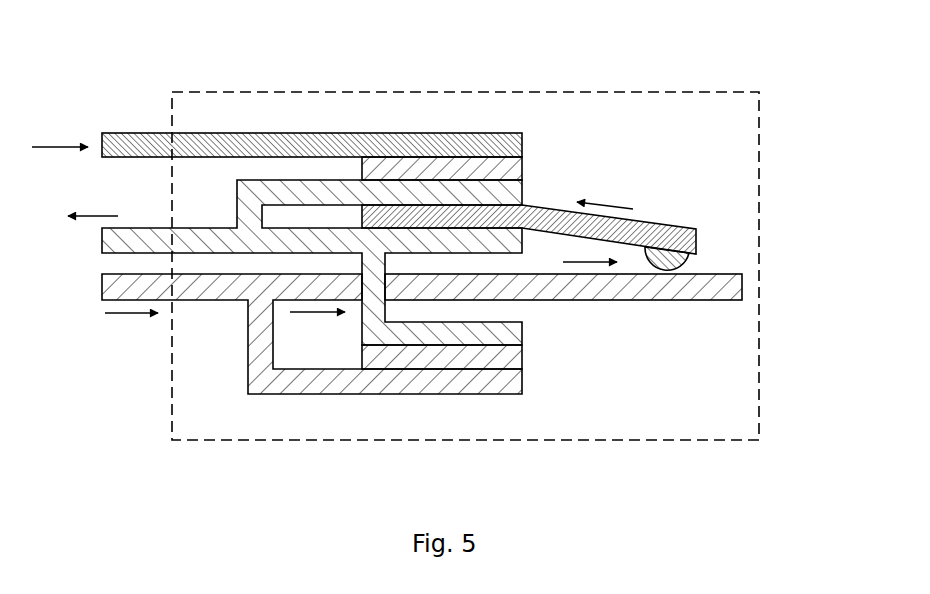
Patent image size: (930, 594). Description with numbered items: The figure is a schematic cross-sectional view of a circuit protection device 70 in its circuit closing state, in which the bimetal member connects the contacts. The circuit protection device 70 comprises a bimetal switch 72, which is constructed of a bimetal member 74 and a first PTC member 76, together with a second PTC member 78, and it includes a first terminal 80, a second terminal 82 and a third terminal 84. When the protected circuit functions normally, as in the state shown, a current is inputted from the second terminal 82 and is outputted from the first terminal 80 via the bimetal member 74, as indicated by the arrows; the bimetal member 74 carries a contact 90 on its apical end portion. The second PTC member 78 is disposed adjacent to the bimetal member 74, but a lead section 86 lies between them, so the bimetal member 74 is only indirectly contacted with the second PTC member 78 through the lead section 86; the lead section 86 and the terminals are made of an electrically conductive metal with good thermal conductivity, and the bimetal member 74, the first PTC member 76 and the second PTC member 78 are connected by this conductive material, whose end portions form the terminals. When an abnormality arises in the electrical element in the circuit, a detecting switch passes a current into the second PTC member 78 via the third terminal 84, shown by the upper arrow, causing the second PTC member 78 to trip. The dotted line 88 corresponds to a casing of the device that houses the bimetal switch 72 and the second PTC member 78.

The circuit protection device 70 is at (617, 84).
The bimetal switch 72 is at (598, 322).
The bimetal member 74 is at (726, 295).
The first PTC member 76 is at (513, 355).
The second PTC member 78 is at (513, 172).
The first terminal 80 is at (112, 238).
The second terminal 82 is at (112, 287).
The third terminal 84 is at (118, 140).
The lead section 86 is at (513, 198).
The dotted line 88 is at (762, 362).
The contact 90 is at (697, 263).